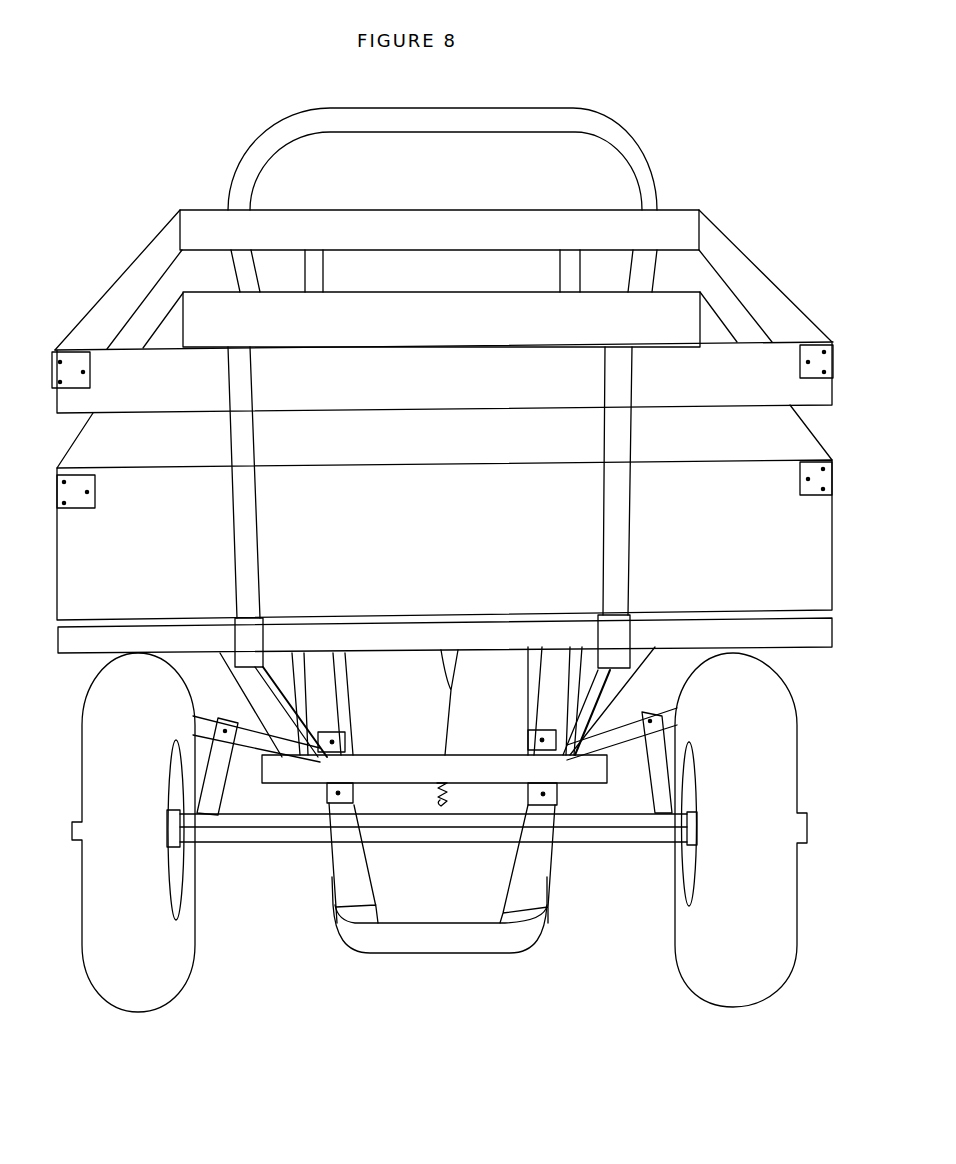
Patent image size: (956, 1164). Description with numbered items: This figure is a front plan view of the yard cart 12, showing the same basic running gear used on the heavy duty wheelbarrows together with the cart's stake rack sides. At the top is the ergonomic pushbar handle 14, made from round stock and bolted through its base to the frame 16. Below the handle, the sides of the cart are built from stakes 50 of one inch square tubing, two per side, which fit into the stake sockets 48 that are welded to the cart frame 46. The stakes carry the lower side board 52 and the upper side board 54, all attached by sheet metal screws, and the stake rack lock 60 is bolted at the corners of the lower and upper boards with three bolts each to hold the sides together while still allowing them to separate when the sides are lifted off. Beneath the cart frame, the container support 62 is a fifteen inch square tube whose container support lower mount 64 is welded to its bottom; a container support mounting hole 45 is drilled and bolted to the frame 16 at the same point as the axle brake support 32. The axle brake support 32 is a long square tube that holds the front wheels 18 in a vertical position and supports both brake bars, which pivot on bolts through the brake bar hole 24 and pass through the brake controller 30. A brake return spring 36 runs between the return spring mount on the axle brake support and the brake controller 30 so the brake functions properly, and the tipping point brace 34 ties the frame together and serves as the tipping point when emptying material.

The yard cart 12 is at (148, 203).
The ergonomic pushbar handle 14 is at (395, 120).
The frame 16 is at (555, 708).
The front wheels 18 is at (120, 815).
The brake bar hole 24 is at (222, 720).
The brake controller 30 is at (440, 662).
The axle brake support 32 is at (228, 833).
The tipping point brace 34 is at (433, 940).
The brake return spring 36 is at (435, 800).
The container support mounting hole 45 is at (348, 735).
The cart frame 46 is at (412, 637).
The stake sockets 48 is at (250, 637).
The stakes 50 is at (315, 272).
The lower side board 52 is at (435, 327).
The upper side board 54 is at (338, 232).
The stake rack lock 60 is at (70, 370).
The container support 62 is at (612, 698).
The container support lower mount 64 is at (347, 800).